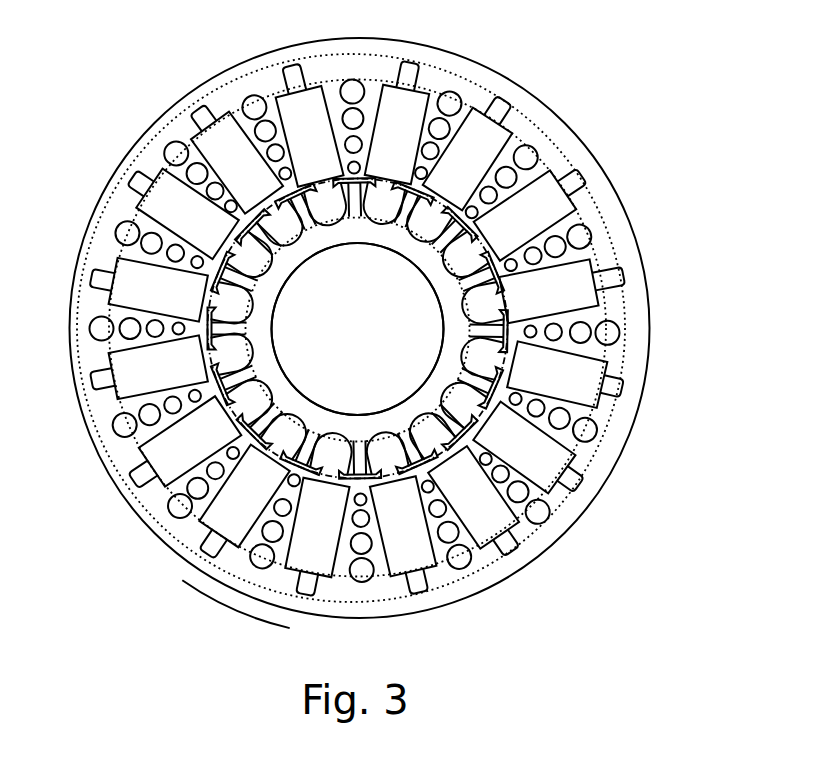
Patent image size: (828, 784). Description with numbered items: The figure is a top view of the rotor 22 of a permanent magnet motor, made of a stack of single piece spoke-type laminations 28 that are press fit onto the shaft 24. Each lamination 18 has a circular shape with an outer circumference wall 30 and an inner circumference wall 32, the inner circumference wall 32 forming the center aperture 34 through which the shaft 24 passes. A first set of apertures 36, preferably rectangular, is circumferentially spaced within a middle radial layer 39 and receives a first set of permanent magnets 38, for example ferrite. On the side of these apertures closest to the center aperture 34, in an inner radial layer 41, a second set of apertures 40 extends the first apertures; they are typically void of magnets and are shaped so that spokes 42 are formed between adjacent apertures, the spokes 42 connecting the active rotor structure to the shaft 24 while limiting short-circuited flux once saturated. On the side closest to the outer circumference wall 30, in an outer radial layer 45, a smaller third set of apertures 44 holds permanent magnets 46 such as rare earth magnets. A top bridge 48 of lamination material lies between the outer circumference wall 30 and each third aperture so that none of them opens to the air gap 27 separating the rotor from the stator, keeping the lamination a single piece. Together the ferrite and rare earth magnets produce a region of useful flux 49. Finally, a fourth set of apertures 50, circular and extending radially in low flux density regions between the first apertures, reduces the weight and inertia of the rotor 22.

The lamination 18 is at (644, 383).
The rotor 22 is at (649, 312).
The shaft 24 is at (343, 338).
The air gap 27 is at (221, 592).
The spoke-type laminations 28 is at (601, 215).
The outer circumference wall 30 is at (590, 161).
The inner circumference wall 32 is at (440, 337).
The center aperture 34 is at (400, 250).
The first set of apertures 36 is at (538, 157).
The first set of permanent magnets 38 is at (482, 123).
The middle radial layer 39 is at (337, 98).
The second set of apertures 40 is at (163, 168).
The inner radial layer 41 is at (253, 165).
The spokes 42 is at (213, 334).
The third set of apertures 44 is at (124, 472).
The outer radial layer 45 is at (158, 522).
The permanent magnets 46 is at (194, 556).
The top bridge 48 is at (278, 601).
The region of useful flux 49 is at (490, 578).
The fourth set of apertures 50 is at (565, 128).